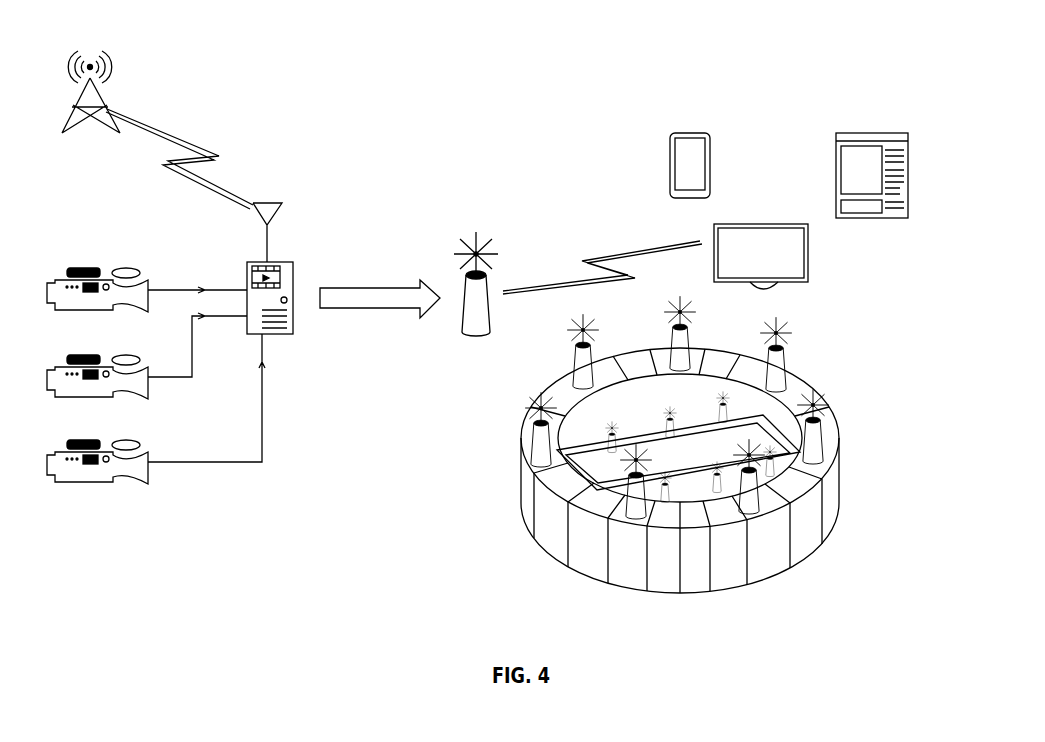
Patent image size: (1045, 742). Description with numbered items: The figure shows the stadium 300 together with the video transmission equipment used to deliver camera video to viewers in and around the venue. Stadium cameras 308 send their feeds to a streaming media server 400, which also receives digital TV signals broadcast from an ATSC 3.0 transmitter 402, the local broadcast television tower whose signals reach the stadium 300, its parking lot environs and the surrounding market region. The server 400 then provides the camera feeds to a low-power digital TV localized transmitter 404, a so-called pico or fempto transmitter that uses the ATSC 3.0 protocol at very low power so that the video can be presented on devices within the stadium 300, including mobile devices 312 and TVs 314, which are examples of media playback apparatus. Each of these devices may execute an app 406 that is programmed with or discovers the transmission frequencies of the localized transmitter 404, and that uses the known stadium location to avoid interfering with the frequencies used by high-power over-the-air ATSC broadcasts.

The ATSC 3.0 transmitter 402 is at (108, 99).
The streaming media server 400 is at (287, 277).
The stadium cameras 308 is at (104, 475).
The low-power digital TV localized transmitter 404 is at (492, 280).
The mobile device 312 is at (672, 163).
The app 406 is at (866, 133).
The TV 314 is at (798, 273).
The stadium 300 is at (523, 480).